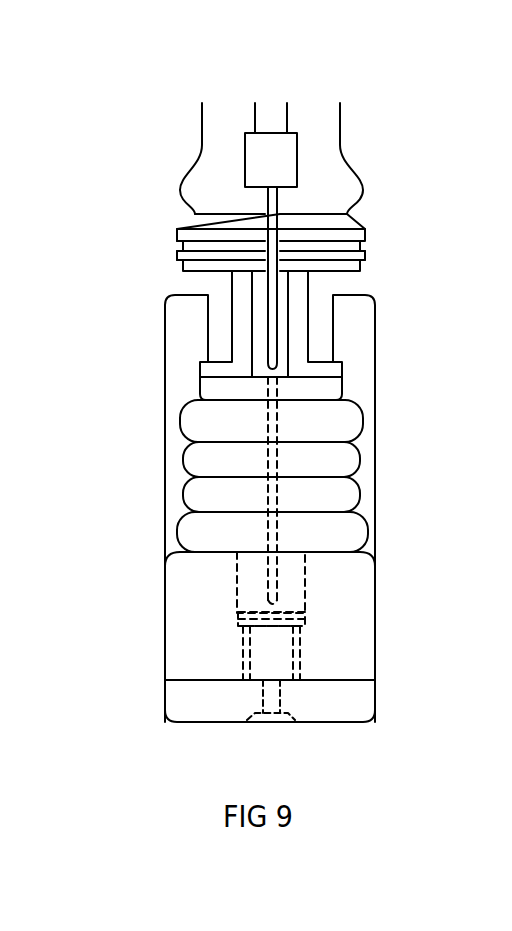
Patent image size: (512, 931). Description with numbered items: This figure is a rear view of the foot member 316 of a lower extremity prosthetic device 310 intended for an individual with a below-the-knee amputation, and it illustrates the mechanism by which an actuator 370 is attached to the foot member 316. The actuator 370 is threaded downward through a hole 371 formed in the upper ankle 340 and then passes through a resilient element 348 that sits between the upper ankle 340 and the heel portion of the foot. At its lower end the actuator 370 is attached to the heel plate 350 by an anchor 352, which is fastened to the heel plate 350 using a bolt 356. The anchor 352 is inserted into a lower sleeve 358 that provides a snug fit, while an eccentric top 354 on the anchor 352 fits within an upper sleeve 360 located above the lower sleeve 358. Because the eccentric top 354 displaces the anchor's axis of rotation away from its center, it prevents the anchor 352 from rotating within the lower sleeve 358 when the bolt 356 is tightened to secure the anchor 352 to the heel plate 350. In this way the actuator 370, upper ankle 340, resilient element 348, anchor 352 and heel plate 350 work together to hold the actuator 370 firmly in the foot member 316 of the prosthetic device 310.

The lower extremity prosthetic device 310 is at (84, 96).
The foot member 316 is at (425, 411).
The upper ankle 340 is at (300, 317).
The resilient element 348 is at (347, 415).
The heel plate 350 is at (170, 713).
The anchor 352 is at (285, 645).
The eccentric top 354 is at (243, 618).
The bolt 356 is at (283, 723).
The lower sleeve 358 is at (242, 658).
The upper sleeve 360 is at (237, 582).
The actuator 370 is at (272, 205).
The hole 371 is at (260, 350).